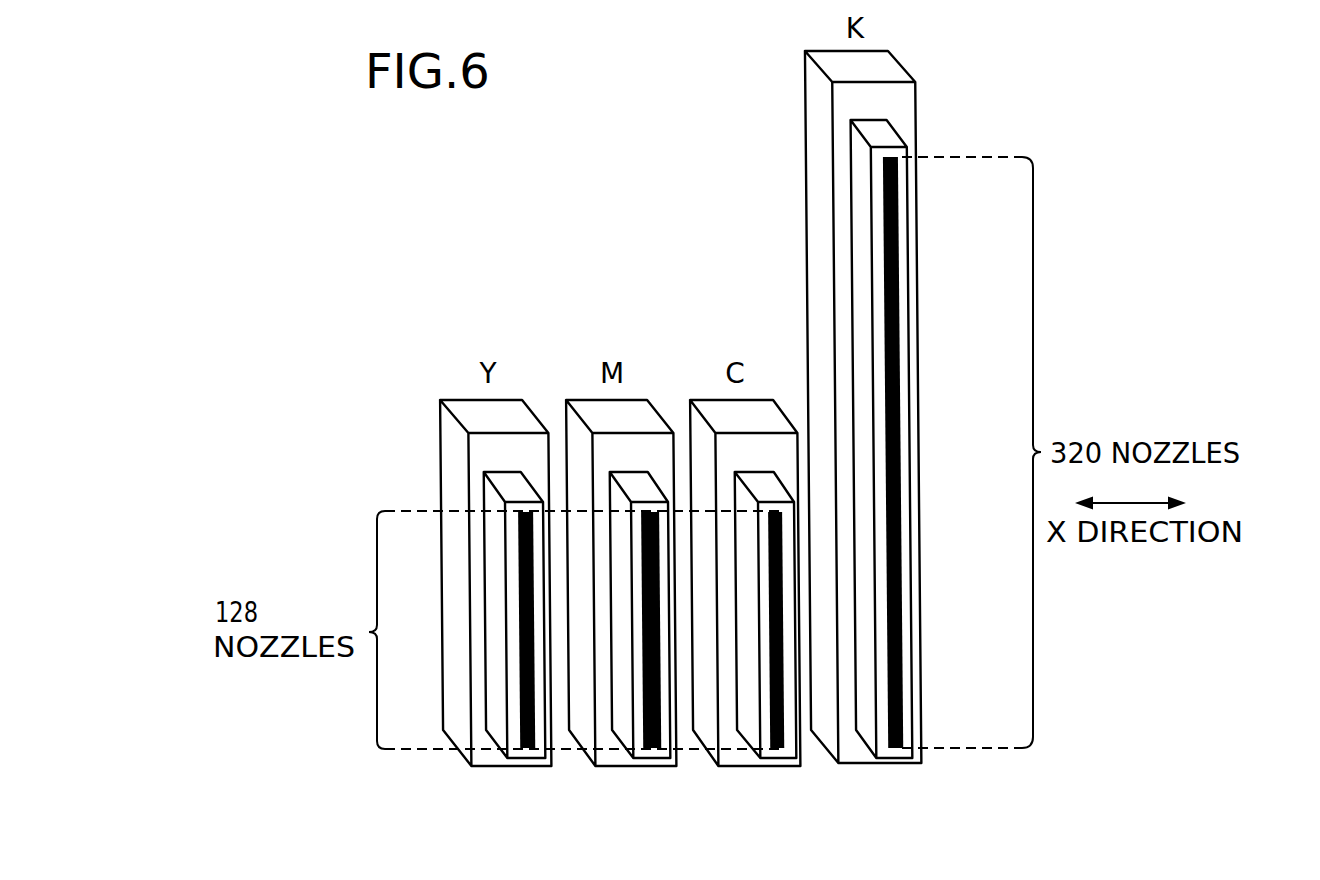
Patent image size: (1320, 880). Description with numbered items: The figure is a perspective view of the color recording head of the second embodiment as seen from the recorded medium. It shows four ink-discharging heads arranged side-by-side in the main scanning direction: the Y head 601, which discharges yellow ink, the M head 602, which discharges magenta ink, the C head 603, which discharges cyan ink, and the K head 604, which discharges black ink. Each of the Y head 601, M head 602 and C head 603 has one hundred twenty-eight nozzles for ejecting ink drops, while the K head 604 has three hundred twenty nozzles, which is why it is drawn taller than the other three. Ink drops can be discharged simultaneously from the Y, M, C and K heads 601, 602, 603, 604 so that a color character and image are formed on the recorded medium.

The Y head 601 is at (492, 757).
The M head 602 is at (617, 757).
The C head 603 is at (740, 757).
The K head 604 is at (857, 757).